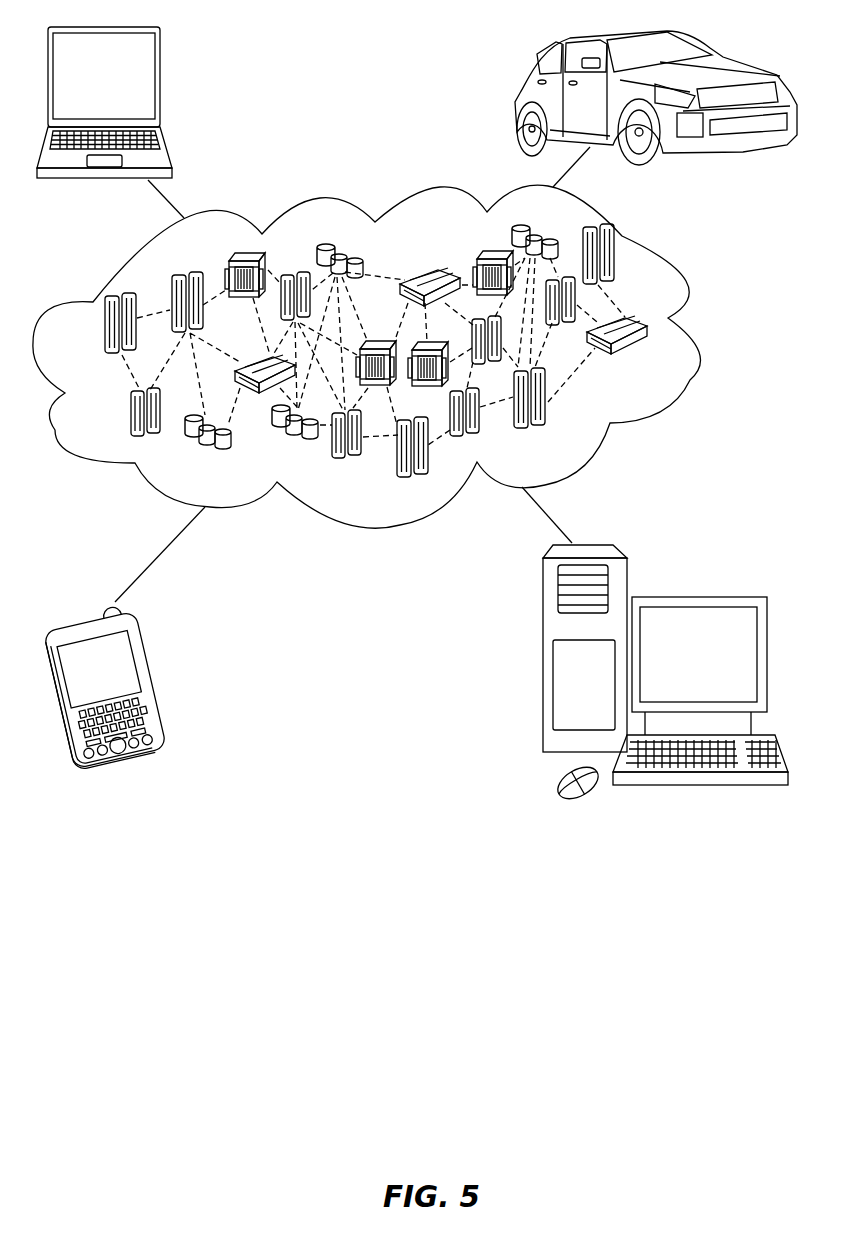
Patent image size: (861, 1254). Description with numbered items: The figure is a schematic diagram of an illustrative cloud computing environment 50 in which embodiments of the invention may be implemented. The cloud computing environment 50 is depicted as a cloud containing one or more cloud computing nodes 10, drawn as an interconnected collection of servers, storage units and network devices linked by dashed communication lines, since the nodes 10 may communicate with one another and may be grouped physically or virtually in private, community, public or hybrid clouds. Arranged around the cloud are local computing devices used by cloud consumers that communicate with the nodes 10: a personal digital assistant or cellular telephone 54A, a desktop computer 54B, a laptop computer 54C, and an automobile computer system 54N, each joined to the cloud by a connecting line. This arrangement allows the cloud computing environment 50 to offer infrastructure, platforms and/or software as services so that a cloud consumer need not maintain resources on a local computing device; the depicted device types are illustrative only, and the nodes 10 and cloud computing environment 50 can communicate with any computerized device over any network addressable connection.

The personal digital assistant or cellular telephone 54A is at (152, 682).
The desktop computer 54B is at (696, 597).
The laptop computer 54C is at (161, 81).
The automobile computer system 54N is at (518, 96).
The cloud computing environment 50 is at (698, 335).
The cloud computing node 10 is at (656, 368).